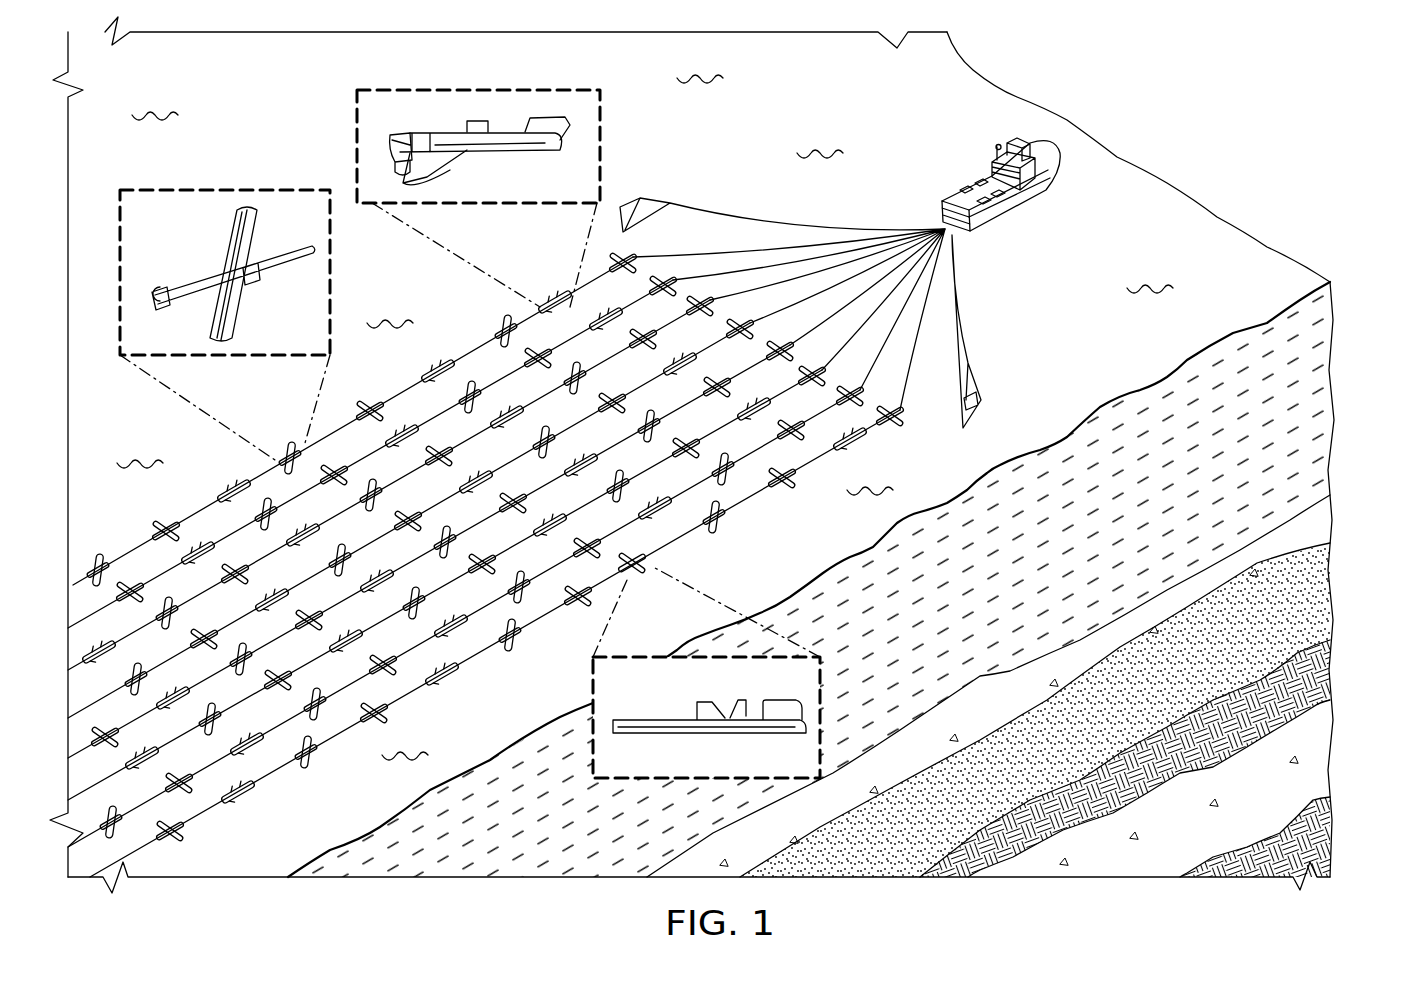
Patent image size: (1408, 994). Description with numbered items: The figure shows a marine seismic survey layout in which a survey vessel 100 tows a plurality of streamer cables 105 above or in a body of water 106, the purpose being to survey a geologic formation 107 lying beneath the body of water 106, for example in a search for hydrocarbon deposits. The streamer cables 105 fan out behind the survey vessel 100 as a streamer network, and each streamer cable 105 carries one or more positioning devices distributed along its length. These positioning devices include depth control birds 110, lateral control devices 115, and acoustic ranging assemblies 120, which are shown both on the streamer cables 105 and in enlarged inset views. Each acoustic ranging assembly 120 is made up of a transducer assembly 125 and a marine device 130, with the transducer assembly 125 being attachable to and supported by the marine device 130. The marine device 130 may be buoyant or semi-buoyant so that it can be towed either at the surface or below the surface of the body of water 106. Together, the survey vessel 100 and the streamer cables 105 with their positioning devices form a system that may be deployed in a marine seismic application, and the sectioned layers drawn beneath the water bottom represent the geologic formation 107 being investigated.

The survey vessel 100 is at (968, 179).
The streamer cables 105 is at (720, 514).
The body of water 106 is at (1322, 336).
The geologic formation 107 is at (1325, 666).
The depth control birds 110 is at (638, 570).
The lateral control devices 115 is at (290, 446).
The acoustic ranging assemblies 120 is at (448, 181).
The transducer assembly 125 is at (378, 152).
The marine device 130 is at (500, 122).